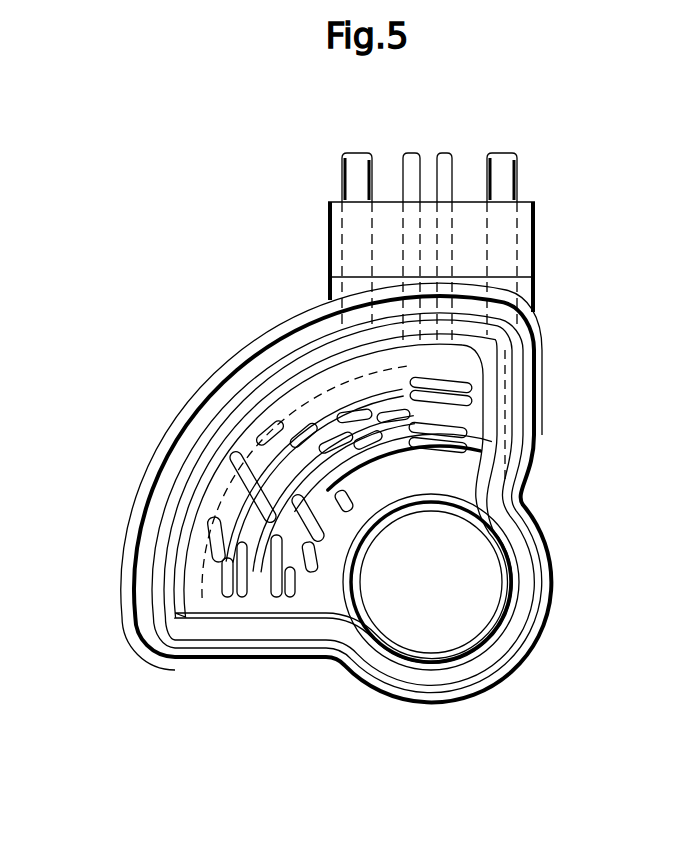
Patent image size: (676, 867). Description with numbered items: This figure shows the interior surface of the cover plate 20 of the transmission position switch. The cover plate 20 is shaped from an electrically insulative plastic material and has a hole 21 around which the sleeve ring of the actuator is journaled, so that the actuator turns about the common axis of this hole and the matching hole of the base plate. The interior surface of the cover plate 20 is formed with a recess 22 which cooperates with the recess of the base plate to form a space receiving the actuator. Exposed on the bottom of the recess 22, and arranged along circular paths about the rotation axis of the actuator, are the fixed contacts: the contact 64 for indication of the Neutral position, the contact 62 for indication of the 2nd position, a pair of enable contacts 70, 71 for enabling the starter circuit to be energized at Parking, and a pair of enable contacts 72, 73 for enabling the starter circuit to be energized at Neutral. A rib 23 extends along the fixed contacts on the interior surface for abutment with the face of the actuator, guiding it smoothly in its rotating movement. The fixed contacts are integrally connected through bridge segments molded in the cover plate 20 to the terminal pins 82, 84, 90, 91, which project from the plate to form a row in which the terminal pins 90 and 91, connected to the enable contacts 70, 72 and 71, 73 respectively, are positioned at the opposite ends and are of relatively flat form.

The cover plate 20 is at (545, 330).
The hole 21 is at (463, 632).
The recess 22 is at (200, 603).
The rib 23 is at (460, 445).
The fixed contact 62 is at (388, 412).
The fixed contact 64 is at (337, 442).
The enable contact 70 is at (308, 567).
The enable contact 71 is at (210, 548).
The enable contact 72 is at (350, 497).
The enable contact 73 is at (267, 432).
The terminal pin 82 is at (443, 157).
The terminal pin 84 is at (412, 157).
The terminal pin 90 is at (507, 158).
The terminal pin 91 is at (350, 163).